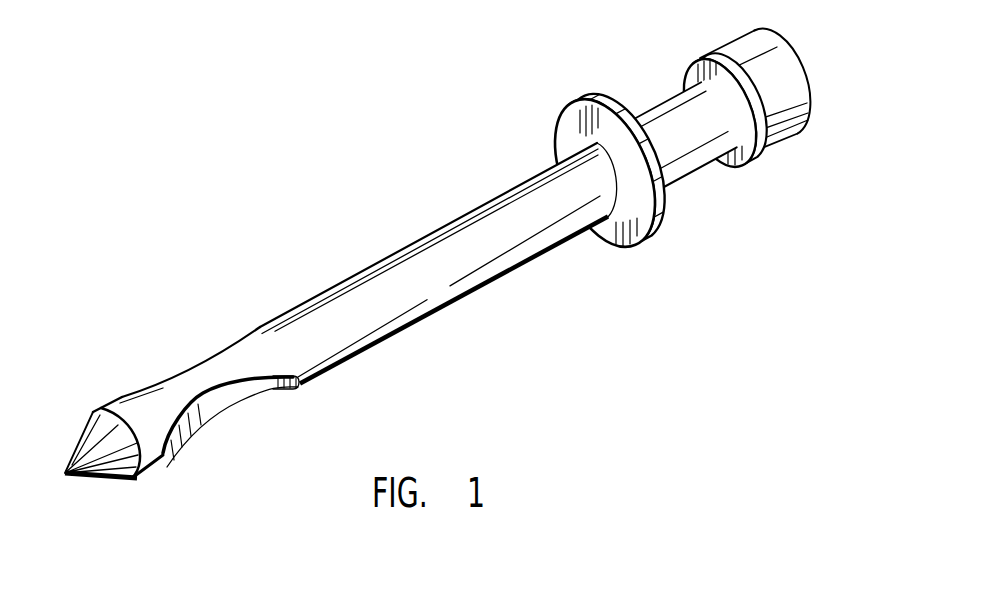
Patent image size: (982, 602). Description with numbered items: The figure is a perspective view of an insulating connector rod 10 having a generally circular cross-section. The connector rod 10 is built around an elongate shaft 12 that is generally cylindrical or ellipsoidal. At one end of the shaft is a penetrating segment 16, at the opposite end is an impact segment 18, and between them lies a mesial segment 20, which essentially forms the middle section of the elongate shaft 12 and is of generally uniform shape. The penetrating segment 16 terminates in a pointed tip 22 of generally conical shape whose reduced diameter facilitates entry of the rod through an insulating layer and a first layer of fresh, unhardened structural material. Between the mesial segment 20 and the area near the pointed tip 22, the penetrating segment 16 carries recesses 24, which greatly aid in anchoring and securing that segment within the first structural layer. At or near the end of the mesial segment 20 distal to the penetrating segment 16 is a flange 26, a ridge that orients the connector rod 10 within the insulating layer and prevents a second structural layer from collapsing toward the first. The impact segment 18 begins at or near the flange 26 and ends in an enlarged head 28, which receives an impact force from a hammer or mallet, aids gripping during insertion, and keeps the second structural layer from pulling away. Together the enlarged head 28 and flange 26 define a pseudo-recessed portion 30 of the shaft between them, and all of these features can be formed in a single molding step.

The connector rod 10 is at (417, 147).
The elongate shaft 12 is at (403, 262).
The penetrating segment 16 is at (160, 429).
The impact segment 18 is at (692, 183).
The mesial segment 20 is at (438, 322).
The pointed tip 22 is at (92, 483).
The recesses 24 is at (183, 387).
The flange 26 is at (641, 248).
The enlarged head 28 is at (808, 121).
The pseudo-recessed portion 30 is at (654, 97).